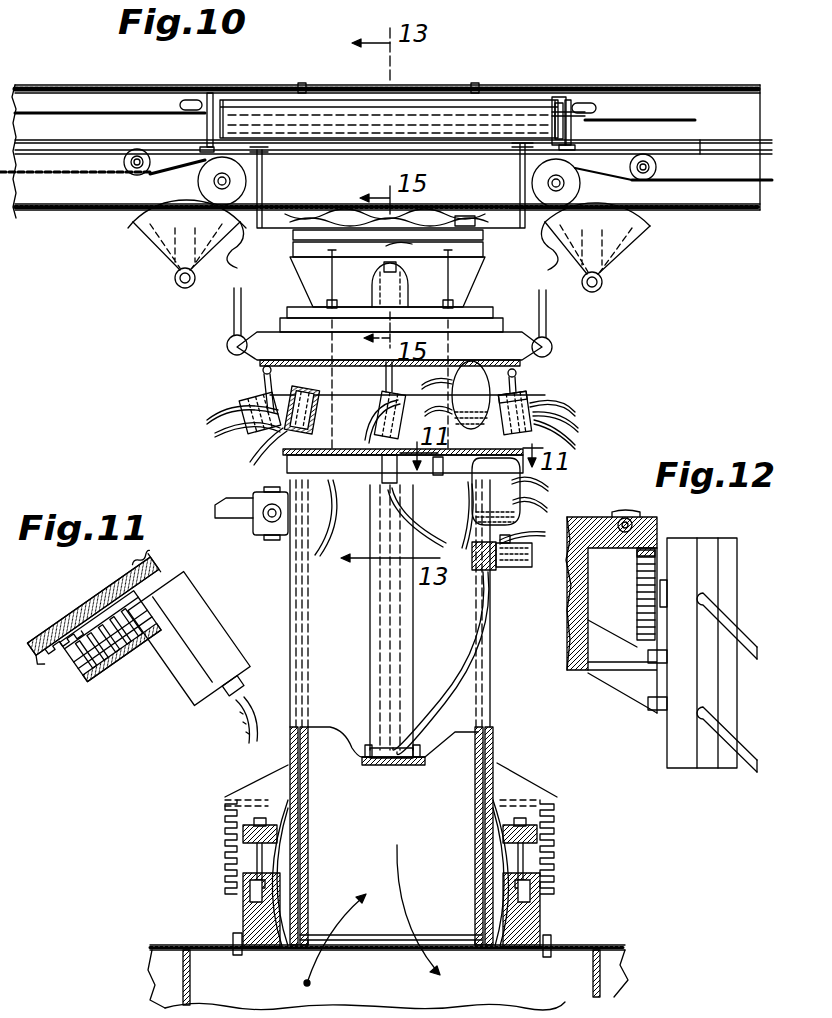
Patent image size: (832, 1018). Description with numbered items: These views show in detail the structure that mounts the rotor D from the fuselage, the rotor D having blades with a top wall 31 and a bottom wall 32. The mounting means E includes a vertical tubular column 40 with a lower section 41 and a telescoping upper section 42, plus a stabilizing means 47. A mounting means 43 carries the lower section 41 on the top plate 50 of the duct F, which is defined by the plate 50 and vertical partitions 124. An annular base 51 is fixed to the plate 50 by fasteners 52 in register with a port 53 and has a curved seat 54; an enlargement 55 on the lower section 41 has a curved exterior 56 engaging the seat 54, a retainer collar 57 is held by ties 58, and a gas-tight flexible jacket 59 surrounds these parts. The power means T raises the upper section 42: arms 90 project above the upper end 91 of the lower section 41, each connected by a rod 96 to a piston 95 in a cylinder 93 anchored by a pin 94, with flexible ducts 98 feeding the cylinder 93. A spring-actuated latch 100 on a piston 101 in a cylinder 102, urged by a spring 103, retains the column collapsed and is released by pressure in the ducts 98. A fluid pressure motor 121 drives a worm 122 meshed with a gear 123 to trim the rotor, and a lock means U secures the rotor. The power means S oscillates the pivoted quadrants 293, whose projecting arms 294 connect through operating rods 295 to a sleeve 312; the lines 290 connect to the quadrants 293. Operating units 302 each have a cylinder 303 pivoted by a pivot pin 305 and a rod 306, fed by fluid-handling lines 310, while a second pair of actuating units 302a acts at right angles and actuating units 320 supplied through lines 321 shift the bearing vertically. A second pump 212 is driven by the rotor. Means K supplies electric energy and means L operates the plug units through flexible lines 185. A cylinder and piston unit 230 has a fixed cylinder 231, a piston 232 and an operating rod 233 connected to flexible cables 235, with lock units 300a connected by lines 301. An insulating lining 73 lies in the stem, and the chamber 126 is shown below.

In FIG. 10, the rotor D is at (104, 80).
In FIG. 10, the top wall 31 is at (742, 86).
In FIG. 10, the bottom wall 32 is at (722, 214).
In FIG. 10, the means to effect operation of the working parts of the units L is at (740, 136).
In FIG. 10, the flexible lines 185 is at (702, 140).
In FIG. 10, the flexible cables 235 is at (648, 118).
In FIG. 10, the lines 301 is at (205, 126).
In FIG. 10, the cylinder and piston unit 230 is at (497, 112).
In FIG. 10, the cylinder 231 is at (352, 107).
In FIG. 10, the operating rod 233 is at (403, 118).
In FIG. 10, the piston 232 is at (240, 108).
In FIG. 10, the fluid pressure actuated lock units 300a is at (212, 92).
In FIG. 10, the line 290 is at (96, 172).
In FIG. 10, the means to supply electric energy K is at (384, 226).
In FIG. 10, the lining 73 is at (458, 216).
In FIG. 10, the lock means U is at (404, 288).
In FIG. 10, the sleeve 312 is at (266, 333).
In FIG. 10, the operating rod 295 is at (236, 313).
In FIG. 10, the pivoted quadrant 293 is at (156, 236).
In FIG. 10, the projecting arm 294 is at (218, 258).
In FIG. 10, the power means S is at (244, 368).
In FIG. 10, the rod 306 is at (260, 378).
In FIG. 10, the operating units 302 is at (207, 420).
In FIG. 10, the actuating units 320 is at (215, 433).
In FIG. 10, the lines 321 is at (250, 462).
In FIG. 10, the gear 123 is at (318, 424).
In FIG. 11, the gear 123 is at (52, 674).
In FIG. 10, the second pair of actuating units 302a is at (386, 402).
In FIG. 10, the second pump 212 is at (516, 384).
In FIG. 10, the pivot pin 305 is at (536, 393).
In FIG. 10, the cylinder 303 is at (550, 408).
In FIG. 10, the fluid-handling lines 310 is at (567, 447).
In FIG. 10, the arms 90 is at (382, 468).
In FIG. 10, the power means T is at (366, 612).
In FIG. 10, the rod 96 is at (402, 614).
In FIG. 10, the cylinder 93 is at (372, 667).
In FIG. 10, the upper end 91 is at (352, 490).
In FIG. 10, the stabilizing means 47 is at (236, 500).
In FIG. 10, the fluid pressure actuated motor 121 is at (540, 497).
In FIG. 11, the fluid pressure actuated motor 121 is at (205, 613).
In FIG. 10, the spring-actuated latch 100 is at (470, 560).
In FIG. 10, the cylinder 102 is at (522, 570).
In FIG. 10, the piston 101 is at (507, 568).
In FIG. 10, the spring 103 is at (527, 554).
In FIG. 10, the flexible fluid-handling ducts 98 is at (445, 670).
In FIG. 10, the lower section 41 is at (472, 720).
In FIG. 10, the pin 94 is at (368, 745).
In FIG. 10, the piston 95 is at (412, 745).
In FIG. 10, the mounting means E is at (498, 692).
In FIG. 10, the upper section 42 is at (478, 760).
In FIG. 11, the upper section 42 is at (90, 608).
In FIG. 10, the tubular column 40 is at (488, 766).
In FIG. 10, the chamber 126 is at (391, 917).
In FIG. 10, the ties 58 is at (256, 862).
In FIG. 10, the retainer collar 57 is at (296, 828).
In FIG. 10, the enlargement 55 is at (292, 862).
In FIG. 10, the seat 54 is at (292, 900).
In FIG. 10, the exterior 56 is at (294, 920).
In FIG. 10, the fasteners 52 is at (236, 956).
In FIG. 10, the flexible jacket 59 is at (560, 828).
In FIG. 10, the mounting means 43 is at (558, 858).
In FIG. 10, the base 51 is at (547, 915).
In FIG. 10, the port 53 is at (496, 950).
In FIG. 10, the duct F is at (582, 936).
In FIG. 10, the vertical partitions 124 is at (183, 968).
In FIG. 10, the top plate 50 is at (210, 945).
In FIG. 11, the worm 122 is at (140, 662).